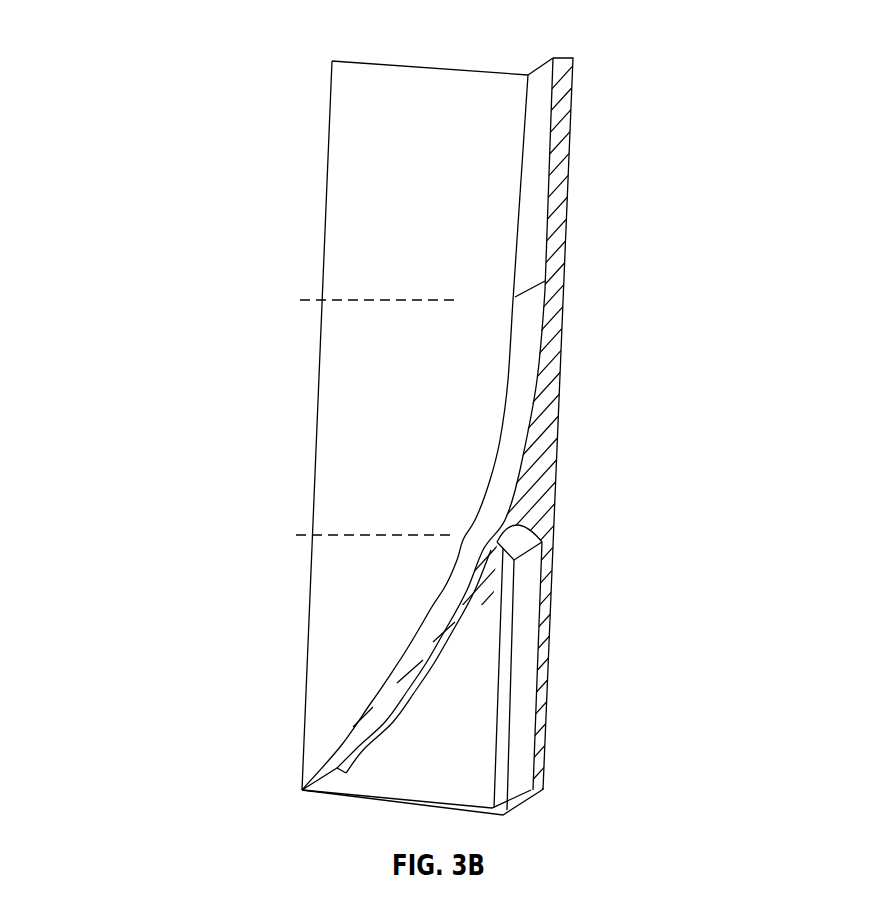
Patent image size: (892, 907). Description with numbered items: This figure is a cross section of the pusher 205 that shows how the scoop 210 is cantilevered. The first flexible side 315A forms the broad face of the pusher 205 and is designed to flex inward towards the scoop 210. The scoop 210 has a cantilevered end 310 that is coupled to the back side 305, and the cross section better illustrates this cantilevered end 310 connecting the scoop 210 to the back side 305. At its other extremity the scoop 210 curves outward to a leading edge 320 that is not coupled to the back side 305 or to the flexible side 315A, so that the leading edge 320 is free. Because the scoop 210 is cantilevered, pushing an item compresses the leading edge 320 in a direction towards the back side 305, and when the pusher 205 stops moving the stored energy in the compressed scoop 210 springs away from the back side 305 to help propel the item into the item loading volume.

The pusher 205 is at (307, 67).
The first flexible side 315A is at (323, 158).
The cantilevered end 310 is at (300, 300).
The back side 305 is at (557, 394).
The scoop 210 is at (376, 699).
The leading edge 320 is at (303, 790).